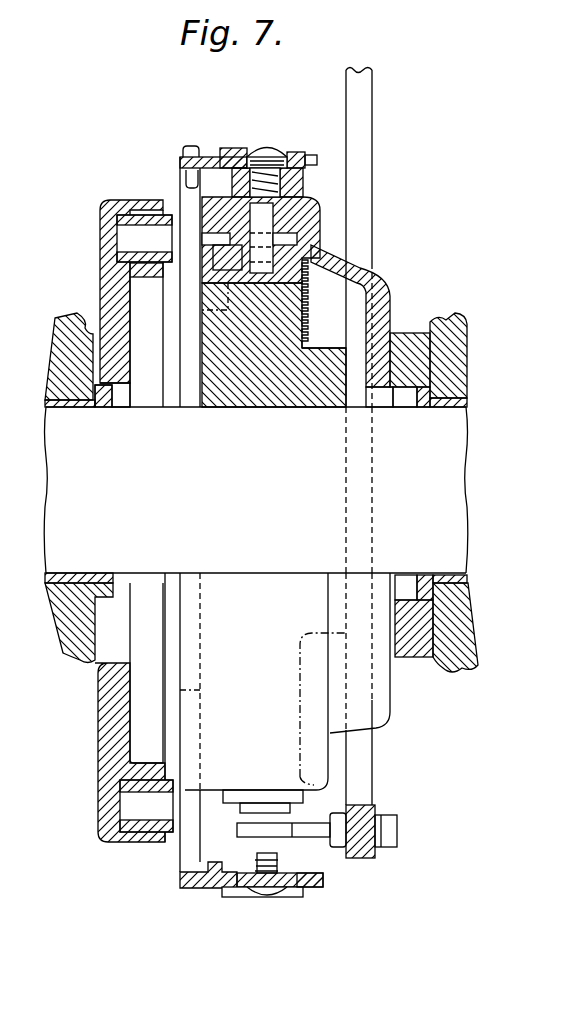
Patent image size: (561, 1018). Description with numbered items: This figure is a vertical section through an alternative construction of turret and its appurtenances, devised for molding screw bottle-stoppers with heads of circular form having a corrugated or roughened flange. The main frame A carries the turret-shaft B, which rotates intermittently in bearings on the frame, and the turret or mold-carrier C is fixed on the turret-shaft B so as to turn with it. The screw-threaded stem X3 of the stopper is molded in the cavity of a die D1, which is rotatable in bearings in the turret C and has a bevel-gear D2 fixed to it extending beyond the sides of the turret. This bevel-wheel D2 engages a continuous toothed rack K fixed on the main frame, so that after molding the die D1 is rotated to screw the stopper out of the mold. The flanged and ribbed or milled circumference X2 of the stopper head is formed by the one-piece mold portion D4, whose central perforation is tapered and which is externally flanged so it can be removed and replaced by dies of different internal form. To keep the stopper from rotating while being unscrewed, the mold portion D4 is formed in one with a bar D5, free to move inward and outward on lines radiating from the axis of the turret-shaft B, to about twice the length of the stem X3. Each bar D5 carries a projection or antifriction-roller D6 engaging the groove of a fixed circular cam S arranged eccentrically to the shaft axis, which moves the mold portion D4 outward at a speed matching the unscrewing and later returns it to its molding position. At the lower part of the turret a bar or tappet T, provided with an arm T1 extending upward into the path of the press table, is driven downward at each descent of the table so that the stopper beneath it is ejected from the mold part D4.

The main frame A is at (458, 372).
The turret-shaft B is at (272, 441).
The turret or mold-carrier C is at (263, 490).
The cam S is at (98, 268).
The toothed rack K is at (308, 308).
The bar or tappet T is at (237, 832).
The arm T1 is at (373, 803).
The die D1 is at (207, 195).
The bevel-gear D2 is at (203, 262).
The mold portion D4 is at (240, 152).
The bar D5 is at (178, 870).
The projection or antifriction-roller D6 is at (136, 858).
The flanged and ribbed or milled circumference X2 is at (288, 153).
The screw-threaded stem X3 is at (300, 181).